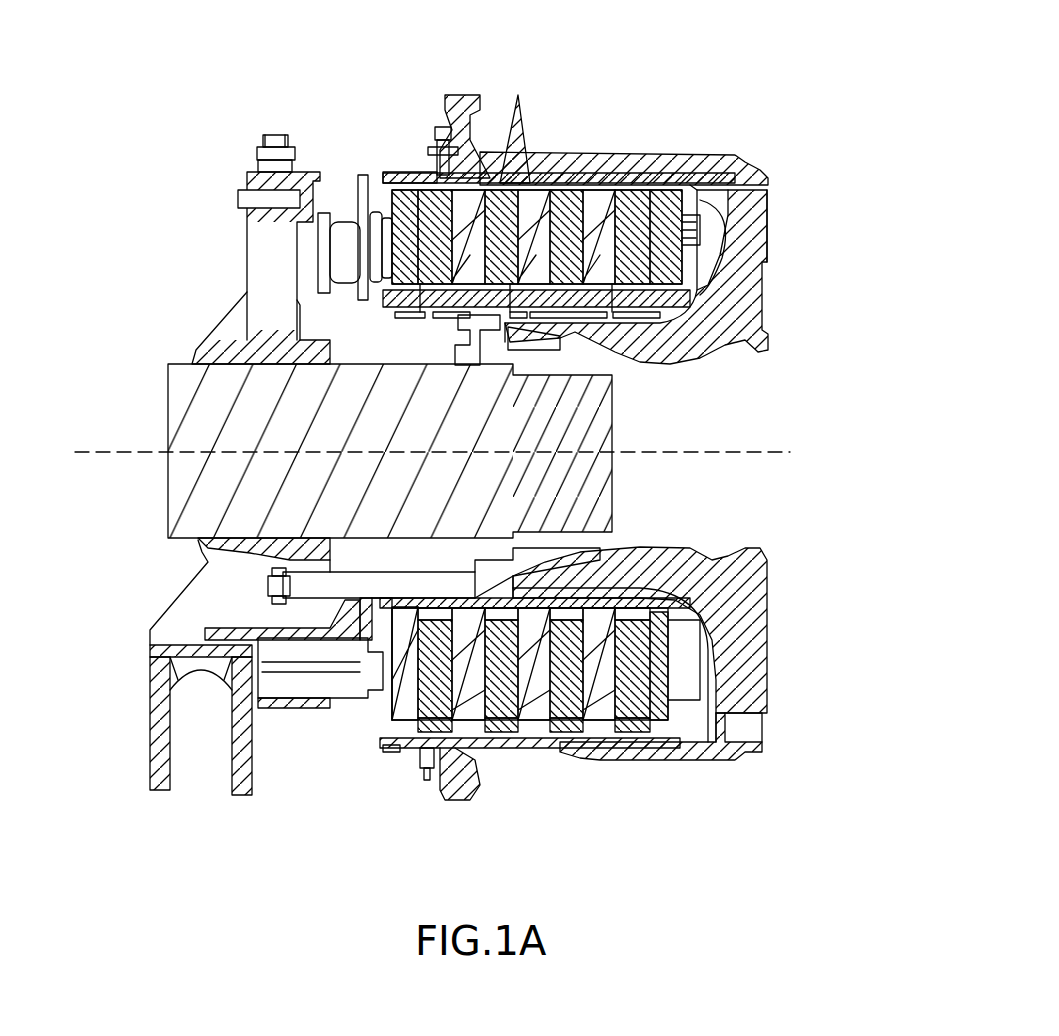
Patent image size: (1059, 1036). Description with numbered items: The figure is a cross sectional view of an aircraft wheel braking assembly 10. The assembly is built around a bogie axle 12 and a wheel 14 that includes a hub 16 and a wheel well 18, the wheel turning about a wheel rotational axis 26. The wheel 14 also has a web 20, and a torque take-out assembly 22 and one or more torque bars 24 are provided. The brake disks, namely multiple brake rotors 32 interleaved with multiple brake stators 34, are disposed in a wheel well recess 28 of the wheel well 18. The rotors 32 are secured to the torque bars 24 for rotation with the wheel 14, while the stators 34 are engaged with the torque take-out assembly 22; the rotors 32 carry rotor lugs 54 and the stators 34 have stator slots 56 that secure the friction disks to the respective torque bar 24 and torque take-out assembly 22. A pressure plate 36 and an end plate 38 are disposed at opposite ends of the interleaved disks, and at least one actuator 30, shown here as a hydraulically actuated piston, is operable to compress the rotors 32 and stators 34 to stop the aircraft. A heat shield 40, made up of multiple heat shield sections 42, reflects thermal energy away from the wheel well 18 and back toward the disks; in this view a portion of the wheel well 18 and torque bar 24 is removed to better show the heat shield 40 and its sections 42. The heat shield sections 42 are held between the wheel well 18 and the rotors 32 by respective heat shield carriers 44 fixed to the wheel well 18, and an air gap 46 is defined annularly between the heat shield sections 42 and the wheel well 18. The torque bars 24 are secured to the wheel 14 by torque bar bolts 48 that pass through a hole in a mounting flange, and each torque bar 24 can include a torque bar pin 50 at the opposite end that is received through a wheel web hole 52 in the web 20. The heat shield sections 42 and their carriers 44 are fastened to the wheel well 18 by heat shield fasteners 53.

The aircraft wheel braking assembly 10 is at (797, 95).
The bogie axle 12 is at (150, 410).
The wheel 14 is at (634, 142).
The hub 16 is at (595, 336).
The wheel well 18 is at (757, 168).
The web 20 is at (755, 250).
The torque take-out assembly 22 is at (438, 318).
The torque bar 24 is at (392, 172).
The wheel rotational axis 26 is at (672, 448).
The wheel well recess 28 is at (715, 270).
The actuator 30 is at (306, 724).
The brake rotor 32 is at (423, 252).
The brake stator 34 is at (456, 252).
The pressure plate 36 is at (416, 252).
The end plate 38 is at (653, 252).
The heat shield 40 is at (404, 764).
The heat shield section 42 is at (565, 170).
The heat shield carrier 44 is at (452, 752).
The air gap 46 is at (486, 120).
The torque bar bolt 48 is at (438, 155).
The torque bar pin 50 is at (712, 190).
The wheel web hole 52 is at (768, 212).
The heat shield fastener 53 is at (436, 757).
The rotor lug 54 is at (508, 110).
The stator slot 56 is at (468, 312).